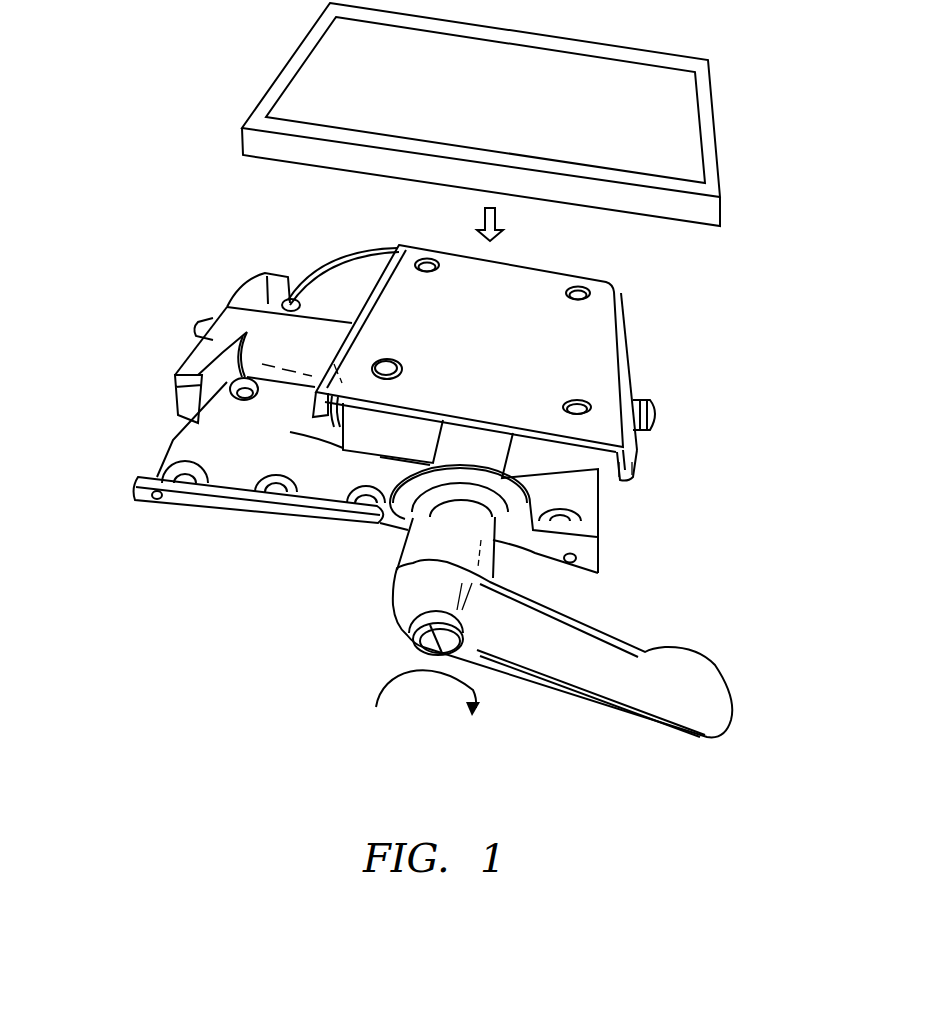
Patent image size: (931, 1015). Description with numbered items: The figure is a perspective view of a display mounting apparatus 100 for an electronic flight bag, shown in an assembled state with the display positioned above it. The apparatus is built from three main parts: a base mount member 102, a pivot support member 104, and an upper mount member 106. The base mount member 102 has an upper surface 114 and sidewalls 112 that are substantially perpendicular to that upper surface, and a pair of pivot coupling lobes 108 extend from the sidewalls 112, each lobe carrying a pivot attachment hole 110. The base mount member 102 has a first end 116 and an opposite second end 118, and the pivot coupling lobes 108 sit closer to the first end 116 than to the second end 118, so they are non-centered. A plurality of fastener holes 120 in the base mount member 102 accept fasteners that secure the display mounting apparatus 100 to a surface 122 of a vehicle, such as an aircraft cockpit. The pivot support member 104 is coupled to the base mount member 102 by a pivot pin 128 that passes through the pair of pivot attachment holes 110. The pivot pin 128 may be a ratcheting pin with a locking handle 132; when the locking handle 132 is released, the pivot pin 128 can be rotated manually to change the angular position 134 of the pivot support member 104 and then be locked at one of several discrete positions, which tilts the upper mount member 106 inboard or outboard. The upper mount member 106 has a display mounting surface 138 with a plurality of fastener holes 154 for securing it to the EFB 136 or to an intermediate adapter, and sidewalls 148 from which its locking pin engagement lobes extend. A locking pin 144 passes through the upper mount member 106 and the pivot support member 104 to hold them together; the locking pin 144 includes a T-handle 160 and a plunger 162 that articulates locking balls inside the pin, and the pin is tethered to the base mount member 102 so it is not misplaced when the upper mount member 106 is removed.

The display mounting apparatus 100 is at (148, 215).
The base mount member 102 is at (381, 493).
The pivot support member 104 is at (373, 443).
The upper mount member 106 is at (527, 363).
The pivot coupling lobes 108 is at (390, 510).
The pivot attachment hole 110 is at (550, 540).
The sidewalls 112 is at (206, 522).
The upper surface 114 is at (660, 413).
The first end 116 is at (614, 542).
The second end 118 is at (148, 497).
The fastener holes 120 is at (172, 475).
The surface 122 is at (253, 642).
The pivot pin 128 is at (423, 643).
The locking handle 132 is at (565, 627).
The angular position 134 is at (427, 668).
The EFB 136 is at (714, 167).
The display mounting surface 138 is at (500, 363).
The locking pin 144 is at (217, 324).
The sidewalls 148 is at (636, 476).
The fastener holes 154 is at (427, 270).
The T-handle 160 is at (273, 277).
The plunger 162 is at (193, 333).